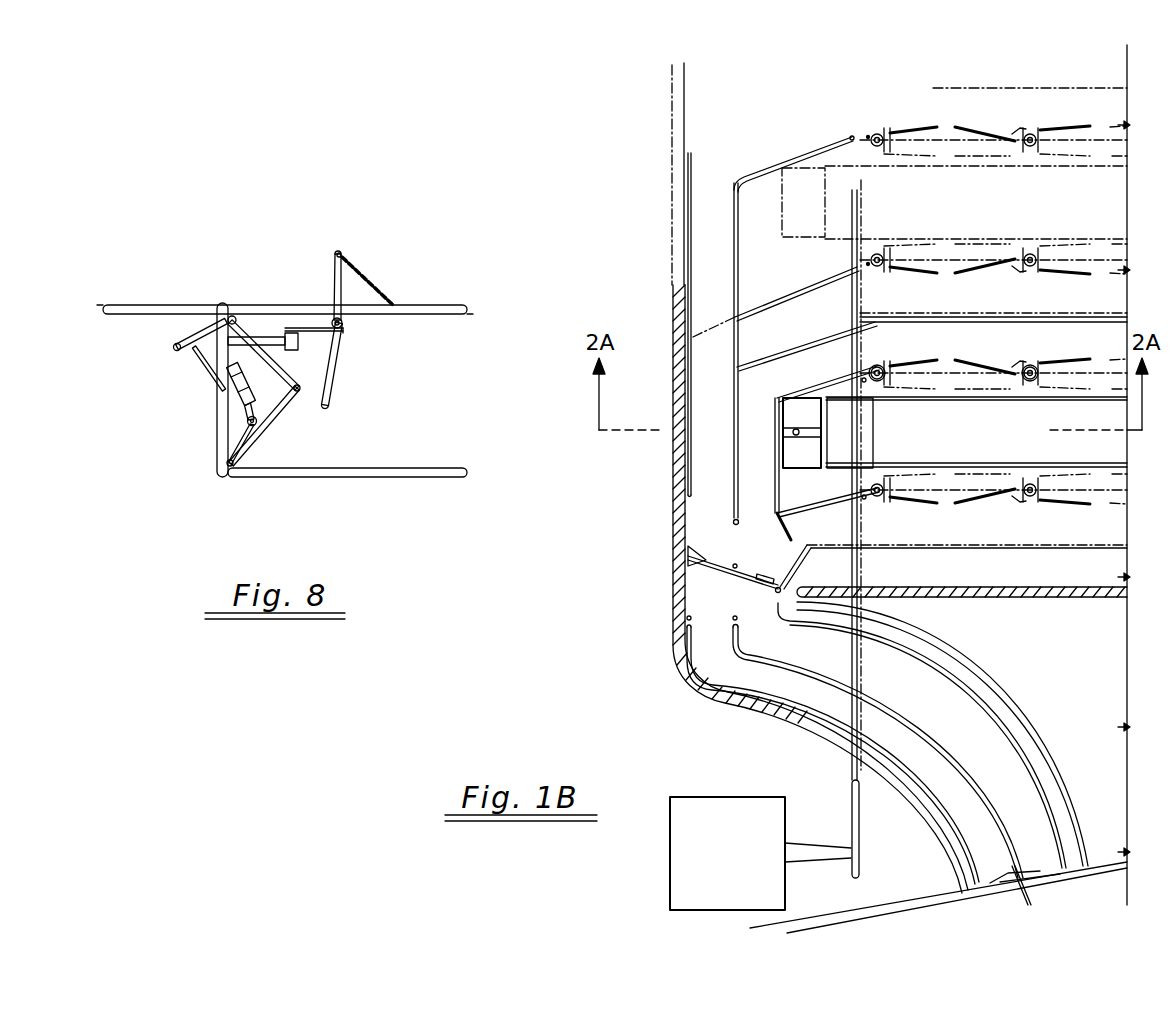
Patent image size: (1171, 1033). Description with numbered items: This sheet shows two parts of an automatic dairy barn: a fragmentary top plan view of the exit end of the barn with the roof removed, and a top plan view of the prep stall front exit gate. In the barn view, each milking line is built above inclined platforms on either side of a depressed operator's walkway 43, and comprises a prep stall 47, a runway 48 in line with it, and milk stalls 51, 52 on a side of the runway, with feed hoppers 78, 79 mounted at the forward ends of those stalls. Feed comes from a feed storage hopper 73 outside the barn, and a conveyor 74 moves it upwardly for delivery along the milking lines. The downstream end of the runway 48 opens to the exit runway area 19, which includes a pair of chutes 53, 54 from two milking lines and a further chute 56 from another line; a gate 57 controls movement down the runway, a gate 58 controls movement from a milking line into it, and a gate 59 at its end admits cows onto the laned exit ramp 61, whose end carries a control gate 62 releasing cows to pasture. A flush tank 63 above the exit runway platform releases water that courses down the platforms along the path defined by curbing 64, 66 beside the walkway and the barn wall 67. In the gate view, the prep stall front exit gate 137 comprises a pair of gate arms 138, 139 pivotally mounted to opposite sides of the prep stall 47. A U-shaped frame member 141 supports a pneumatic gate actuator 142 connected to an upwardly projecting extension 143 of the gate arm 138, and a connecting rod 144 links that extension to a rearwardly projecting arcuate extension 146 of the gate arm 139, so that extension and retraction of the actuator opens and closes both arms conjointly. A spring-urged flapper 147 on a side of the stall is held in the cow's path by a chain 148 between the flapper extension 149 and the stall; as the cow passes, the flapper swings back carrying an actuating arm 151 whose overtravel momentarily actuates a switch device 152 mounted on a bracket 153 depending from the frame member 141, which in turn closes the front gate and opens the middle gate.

In FIG. 1B, the exit runway area 19 is at (702, 400).
In FIG. 1B, the operator's walkway 43 is at (1074, 440).
In FIG. 8, the prep stall 47 is at (436, 305).
In FIG. 8, the runway 48 is at (93, 383).
In FIG. 1B, the runway 48 is at (1010, 345).
In FIG. 1B, the milk stall 51 is at (1098, 355).
In FIG. 1B, the milk stall 52 is at (946, 352).
In FIG. 1B, the chute 53 is at (747, 473).
In FIG. 1B, the chute 54 is at (703, 447).
In FIG. 1B, the chute 56 is at (697, 243).
In FIG. 1B, the gate 57 is at (720, 322).
In FIG. 1B, the gate 58 is at (791, 537).
In FIG. 1B, the gate 59 is at (697, 563).
In FIG. 1B, the laned exit ramp 61 is at (718, 707).
In FIG. 1B, the control gate 62 is at (1040, 880).
In FIG. 1B, the flush tank 63 is at (806, 400).
In FIG. 1B, the curbing 64 is at (896, 462).
In FIG. 1B, the curbing 66 is at (893, 401).
In FIG. 1B, the wall 67 is at (975, 587).
In FIG. 1B, the feed storage hopper 73 is at (716, 853).
In FIG. 1B, the conveyor 74 is at (852, 801).
In FIG. 1B, the feed hopper 78 is at (1030, 391).
In FIG. 1B, the feed hopper 79 is at (875, 366).
In FIG. 8, the prep stall front exit gate 137 is at (201, 400).
In FIG. 8, the gate arm 138 is at (287, 414).
In FIG. 8, the gate arm 139 is at (290, 377).
In FIG. 8, the U-shaped frame member 141 is at (217, 424).
In FIG. 8, the gate actuator 142 is at (242, 393).
In FIG. 8, the extension 143 is at (248, 440).
In FIG. 8, the connecting rod 144 is at (200, 359).
In FIG. 8, the arcuate extension 146 is at (177, 345).
In FIG. 8, the flapper 147 is at (338, 378).
In FIG. 8, the chain 148 is at (379, 286).
In FIG. 8, the flapper extension 149 is at (335, 268).
In FIG. 8, the actuating arm 151 is at (316, 328).
In FIG. 8, the switch device 152 is at (294, 351).
In FIG. 8, the bracket 153 is at (260, 336).